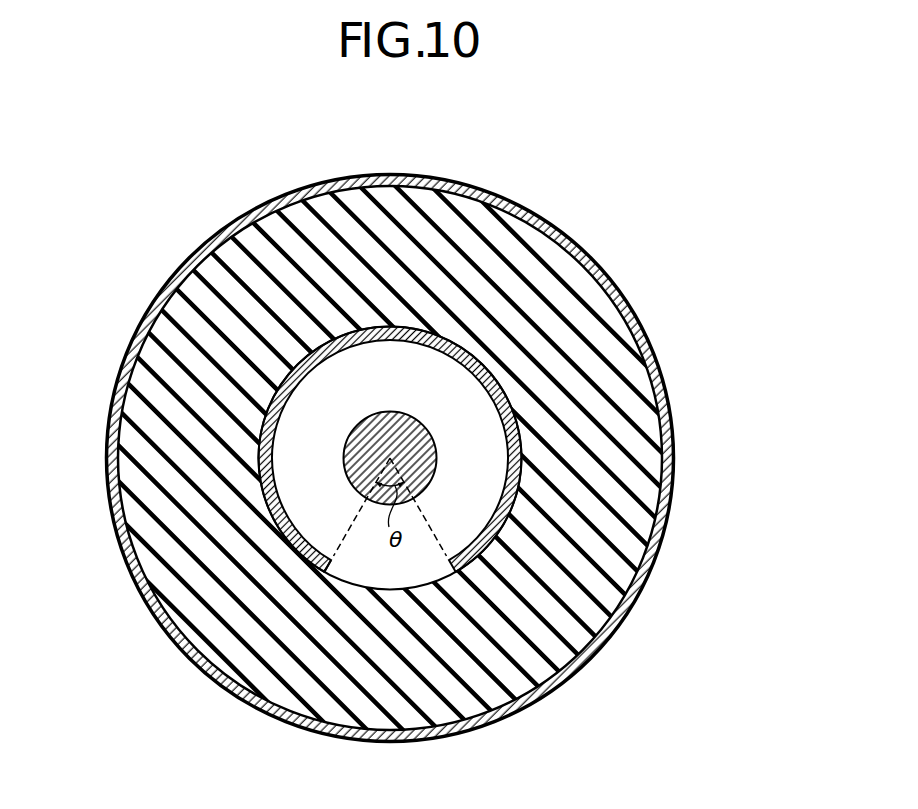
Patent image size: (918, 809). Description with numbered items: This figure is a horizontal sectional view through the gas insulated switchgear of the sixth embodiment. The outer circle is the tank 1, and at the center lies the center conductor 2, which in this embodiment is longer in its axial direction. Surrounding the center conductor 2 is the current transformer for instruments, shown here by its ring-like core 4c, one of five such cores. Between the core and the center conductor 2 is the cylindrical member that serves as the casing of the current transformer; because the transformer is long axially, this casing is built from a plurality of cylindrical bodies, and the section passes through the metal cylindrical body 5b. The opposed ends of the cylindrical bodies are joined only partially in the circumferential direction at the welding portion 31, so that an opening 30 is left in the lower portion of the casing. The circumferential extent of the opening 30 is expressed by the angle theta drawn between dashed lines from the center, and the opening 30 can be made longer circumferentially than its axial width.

The tank 1 is at (667, 495).
The center conductor 2 is at (382, 433).
The ring-like core 4c is at (397, 210).
The cylindrical body 5b is at (511, 448).
The opening 30 is at (335, 568).
The welding portion 31 is at (297, 533).